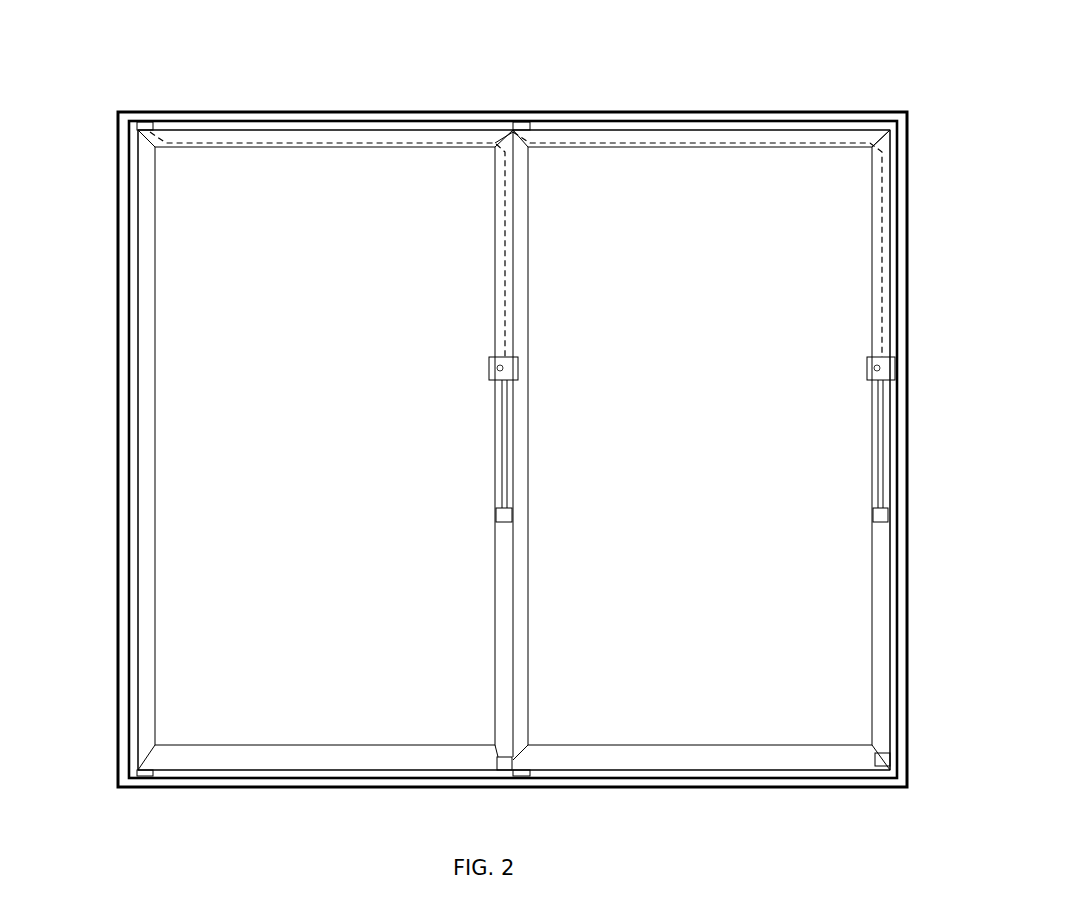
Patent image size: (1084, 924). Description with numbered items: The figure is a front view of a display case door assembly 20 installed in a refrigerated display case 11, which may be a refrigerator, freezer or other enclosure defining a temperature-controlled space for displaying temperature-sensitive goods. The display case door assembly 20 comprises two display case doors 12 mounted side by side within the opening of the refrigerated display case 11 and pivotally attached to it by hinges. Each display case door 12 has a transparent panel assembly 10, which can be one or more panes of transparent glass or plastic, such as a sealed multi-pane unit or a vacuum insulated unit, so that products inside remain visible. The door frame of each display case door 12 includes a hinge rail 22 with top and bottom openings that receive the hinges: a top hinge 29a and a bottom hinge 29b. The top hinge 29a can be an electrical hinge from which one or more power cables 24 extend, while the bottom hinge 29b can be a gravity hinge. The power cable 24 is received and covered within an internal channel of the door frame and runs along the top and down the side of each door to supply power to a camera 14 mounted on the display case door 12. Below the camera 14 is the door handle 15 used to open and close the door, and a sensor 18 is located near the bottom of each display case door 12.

The transparent panel assembly 10 is at (182, 628).
The refrigerated display case 11 is at (125, 335).
The display case door 12 is at (138, 172).
The camera 14 is at (520, 368).
The door handle 15 is at (503, 478).
The sensor 18 is at (500, 770).
The display case door assembly 20 is at (816, 104).
The hinge rail 22 is at (150, 520).
The power cable 24 is at (432, 142).
The top hinge 29a is at (147, 122).
The bottom hinge 29b is at (148, 777).